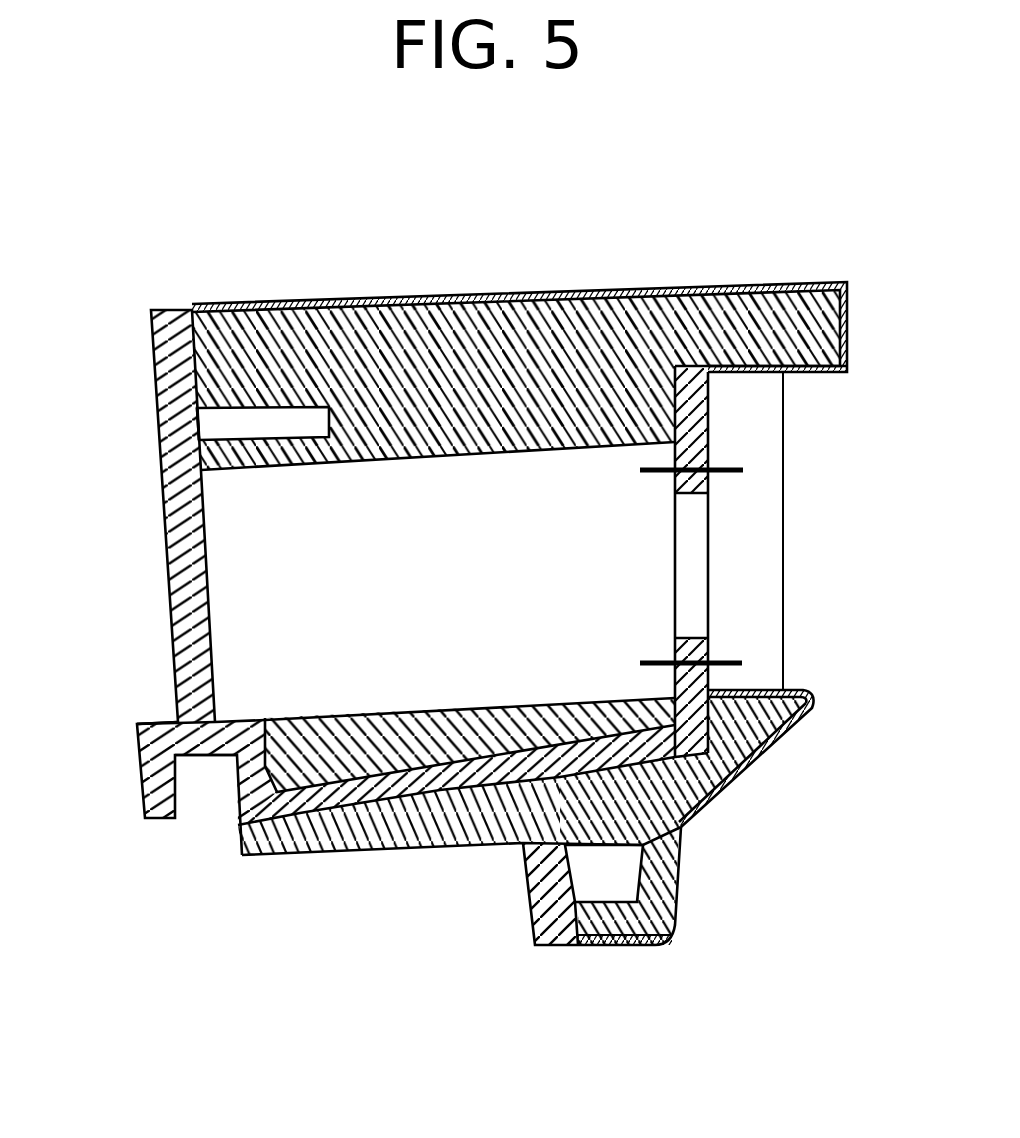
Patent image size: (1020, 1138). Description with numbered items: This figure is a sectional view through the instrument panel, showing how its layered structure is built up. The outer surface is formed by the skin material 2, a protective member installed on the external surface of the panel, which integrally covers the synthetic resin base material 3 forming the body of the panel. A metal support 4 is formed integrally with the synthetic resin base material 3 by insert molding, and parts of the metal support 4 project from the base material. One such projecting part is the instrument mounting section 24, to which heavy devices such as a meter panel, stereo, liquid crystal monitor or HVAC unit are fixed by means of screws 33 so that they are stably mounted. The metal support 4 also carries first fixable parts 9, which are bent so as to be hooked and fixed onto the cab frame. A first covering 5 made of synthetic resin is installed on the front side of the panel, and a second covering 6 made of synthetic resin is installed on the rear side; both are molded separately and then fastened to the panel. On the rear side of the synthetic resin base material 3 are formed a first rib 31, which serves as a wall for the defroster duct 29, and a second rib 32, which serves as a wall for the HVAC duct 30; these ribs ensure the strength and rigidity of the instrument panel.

The skin material 2 is at (845, 282).
The synthetic resin base material 3 is at (600, 345).
The metal support 4 is at (142, 767).
The first covering 5 is at (165, 562).
The second covering 6 is at (553, 947).
The first fixable parts 9 is at (162, 722).
The instrument mounting section 24 is at (710, 653).
The defroster duct 29 is at (263, 430).
The HVAC duct 30 is at (605, 857).
The first rib 31 is at (195, 452).
The second rib 32 is at (622, 940).
The screws 33 is at (730, 462).